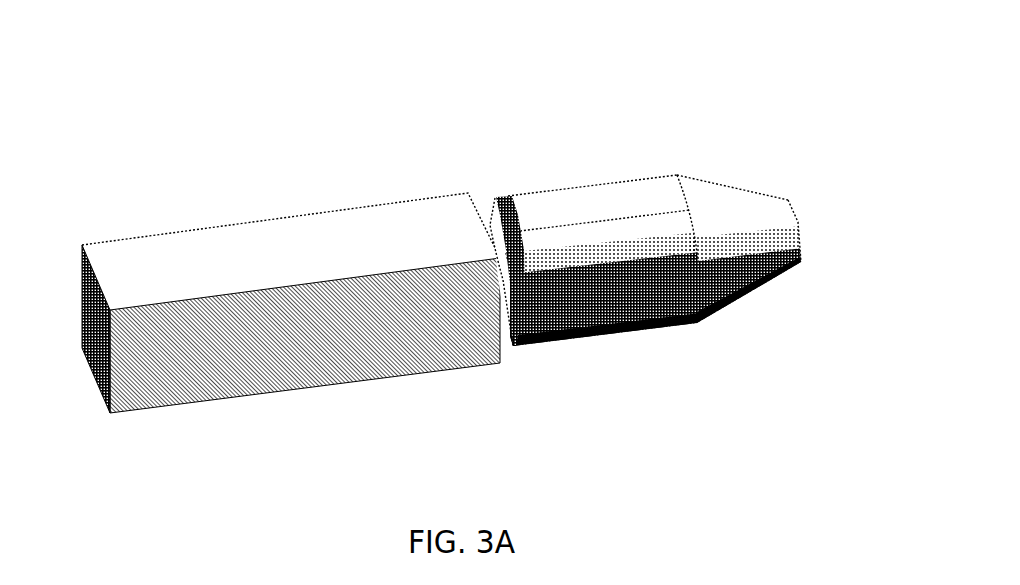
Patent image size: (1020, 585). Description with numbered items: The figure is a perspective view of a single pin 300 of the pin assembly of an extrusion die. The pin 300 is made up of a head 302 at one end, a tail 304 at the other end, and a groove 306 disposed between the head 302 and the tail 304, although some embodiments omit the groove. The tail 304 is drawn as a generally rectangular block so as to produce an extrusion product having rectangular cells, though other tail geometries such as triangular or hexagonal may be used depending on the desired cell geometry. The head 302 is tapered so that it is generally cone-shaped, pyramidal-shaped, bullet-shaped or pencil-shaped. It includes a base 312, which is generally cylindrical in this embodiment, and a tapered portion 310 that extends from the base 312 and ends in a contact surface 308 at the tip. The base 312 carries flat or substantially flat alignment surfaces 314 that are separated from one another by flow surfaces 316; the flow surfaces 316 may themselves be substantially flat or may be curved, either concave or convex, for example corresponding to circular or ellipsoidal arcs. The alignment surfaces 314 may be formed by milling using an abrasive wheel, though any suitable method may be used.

The pin 300 is at (417, 470).
The head 302 is at (792, 100).
The tail 304 is at (456, 152).
The groove 306 is at (521, 372).
The contact surface 308 is at (797, 222).
The tapered portion 310 is at (768, 272).
The base 312 is at (626, 361).
The alignment surfaces 314 is at (620, 310).
The flow surfaces 316 is at (657, 247).